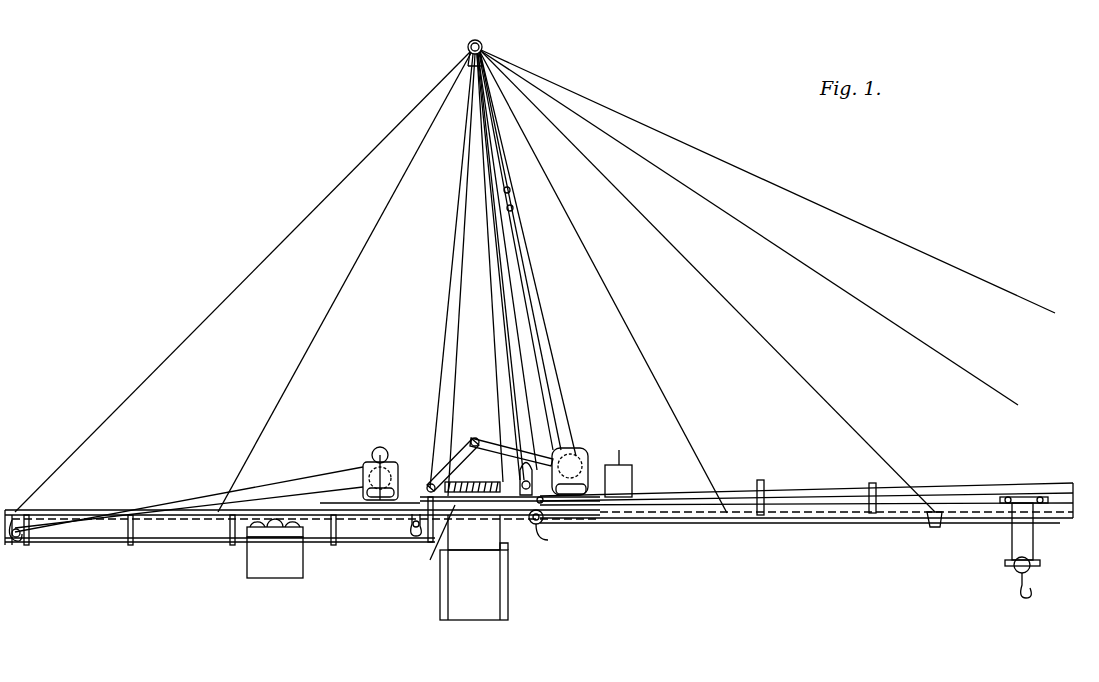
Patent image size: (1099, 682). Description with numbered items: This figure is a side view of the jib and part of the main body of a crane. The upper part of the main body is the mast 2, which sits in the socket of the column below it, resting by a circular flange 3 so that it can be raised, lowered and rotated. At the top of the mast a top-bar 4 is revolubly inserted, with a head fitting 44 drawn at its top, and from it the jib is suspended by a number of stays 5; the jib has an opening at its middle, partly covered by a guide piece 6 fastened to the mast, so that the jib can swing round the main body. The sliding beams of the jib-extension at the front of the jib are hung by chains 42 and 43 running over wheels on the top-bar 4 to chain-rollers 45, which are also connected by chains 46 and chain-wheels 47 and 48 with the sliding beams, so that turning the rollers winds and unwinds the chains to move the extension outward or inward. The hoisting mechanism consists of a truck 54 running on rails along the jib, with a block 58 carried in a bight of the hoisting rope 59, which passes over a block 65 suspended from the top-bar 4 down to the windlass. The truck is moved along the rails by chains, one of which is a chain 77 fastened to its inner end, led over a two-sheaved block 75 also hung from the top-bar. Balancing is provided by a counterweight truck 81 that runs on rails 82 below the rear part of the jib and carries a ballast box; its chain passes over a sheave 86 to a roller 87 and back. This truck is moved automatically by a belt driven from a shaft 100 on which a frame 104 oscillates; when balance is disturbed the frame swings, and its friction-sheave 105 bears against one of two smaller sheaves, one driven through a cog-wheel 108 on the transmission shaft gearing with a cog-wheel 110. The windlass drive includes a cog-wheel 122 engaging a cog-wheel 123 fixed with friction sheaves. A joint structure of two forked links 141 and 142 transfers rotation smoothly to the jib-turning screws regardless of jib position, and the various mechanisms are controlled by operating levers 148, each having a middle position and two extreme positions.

The mast 2 is at (474, 567).
The circular flange 3 is at (506, 548).
The top-bar 4 is at (474, 40).
The stays 5 is at (210, 313).
The guide piece 6 is at (430, 545).
The chain 42 is at (882, 236).
The chain 43 is at (866, 307).
The mast head pulley 44 is at (483, 46).
The chain-rollers 45 is at (528, 465).
The chains 46 is at (657, 520).
The chain-wheel 47 is at (545, 505).
The chain-wheel 48 is at (942, 520).
The truck 54 is at (1040, 505).
The block 58 is at (1018, 576).
The rope 59 is at (1010, 540).
The block 65 is at (514, 209).
The two-sheaved block 75 is at (511, 190).
The chain 77 is at (476, 482).
The truck 81 is at (262, 538).
The rails 82 is at (188, 543).
The sheave 86 is at (410, 530).
The roller 87 is at (17, 542).
The shaft 100 is at (365, 488).
The frame 104 is at (383, 465).
The friction-sheave 105 is at (380, 448).
The cog-wheel 108 is at (396, 490).
The cog-wheel 110 is at (366, 470).
The cog-wheel 122 is at (566, 450).
The cog-wheel 123 is at (578, 470).
The forked link 141 is at (476, 438).
The forked link 142 is at (445, 470).
The operating lever 148 is at (623, 460).